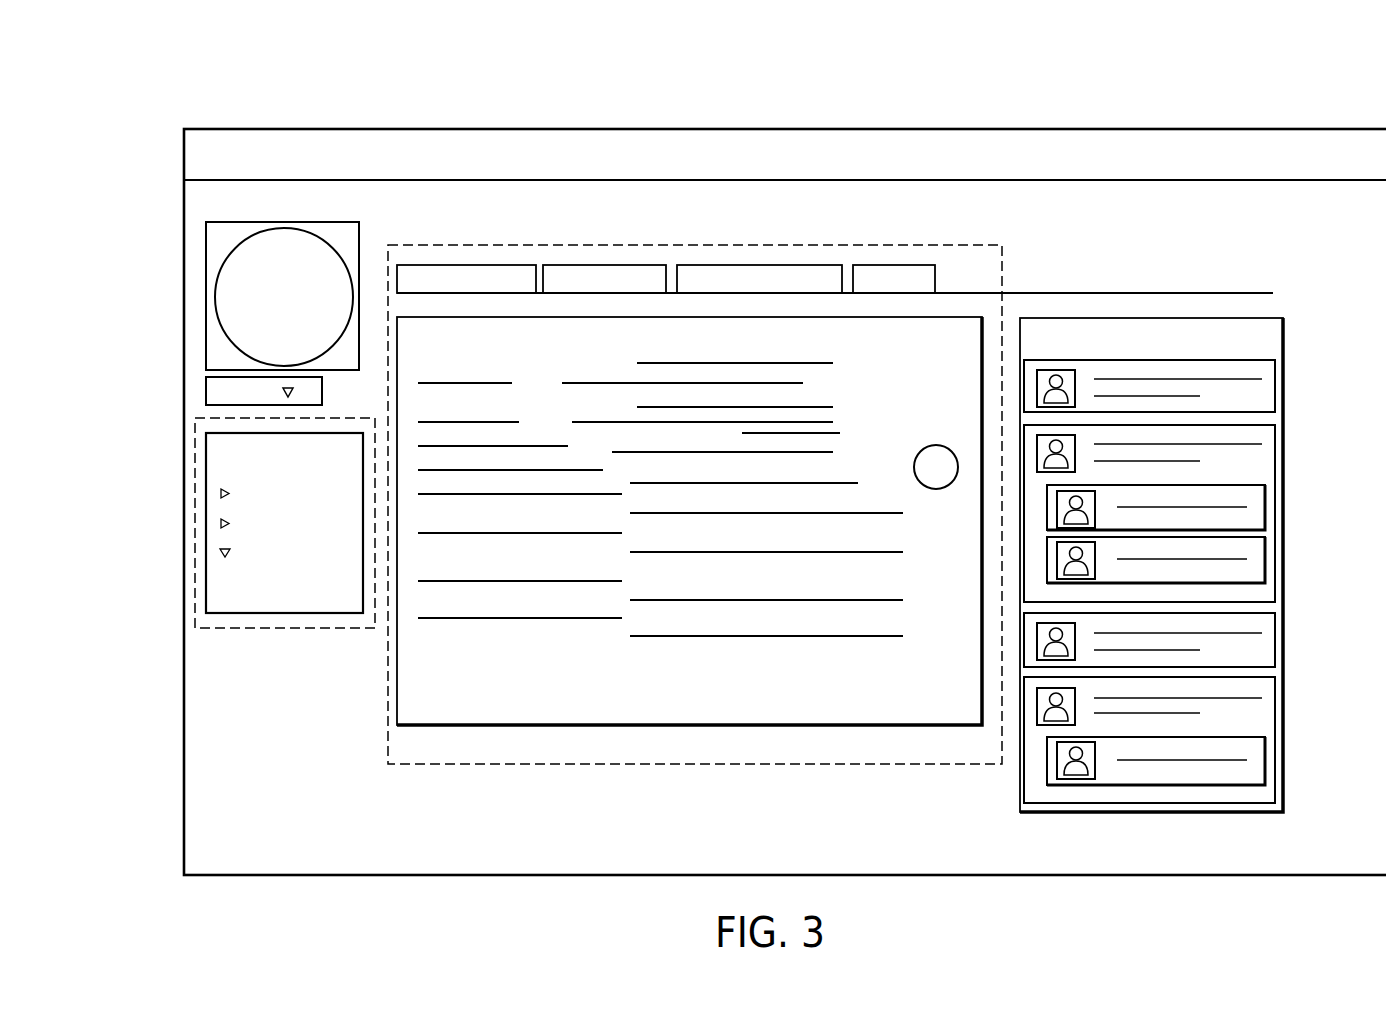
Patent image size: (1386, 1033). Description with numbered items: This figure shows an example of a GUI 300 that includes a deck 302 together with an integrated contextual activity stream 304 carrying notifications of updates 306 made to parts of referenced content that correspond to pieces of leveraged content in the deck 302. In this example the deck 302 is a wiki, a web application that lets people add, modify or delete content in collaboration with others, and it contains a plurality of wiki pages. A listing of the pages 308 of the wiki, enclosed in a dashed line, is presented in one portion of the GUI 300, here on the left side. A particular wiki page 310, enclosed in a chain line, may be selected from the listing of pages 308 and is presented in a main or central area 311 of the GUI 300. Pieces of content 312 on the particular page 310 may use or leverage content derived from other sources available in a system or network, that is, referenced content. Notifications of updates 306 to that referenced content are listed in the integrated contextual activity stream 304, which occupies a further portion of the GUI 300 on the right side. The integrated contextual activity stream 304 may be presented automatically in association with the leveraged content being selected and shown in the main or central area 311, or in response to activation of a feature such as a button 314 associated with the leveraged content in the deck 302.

The GUI 300 is at (883, 127).
The deck 302 is at (277, 598).
The integrated contextual activity stream 304 is at (1162, 824).
The notifications of updates 306 is at (1295, 318).
The listing of the pages 308 is at (195, 530).
The particular wiki page 310 is at (455, 764).
The main or central area 311 is at (673, 771).
The pieces of content 312 is at (713, 648).
The button 314 is at (937, 445).